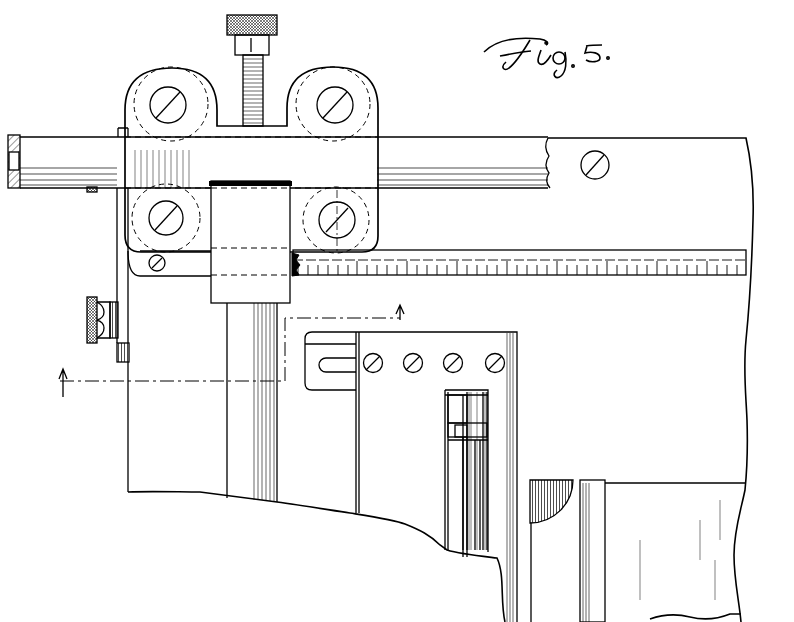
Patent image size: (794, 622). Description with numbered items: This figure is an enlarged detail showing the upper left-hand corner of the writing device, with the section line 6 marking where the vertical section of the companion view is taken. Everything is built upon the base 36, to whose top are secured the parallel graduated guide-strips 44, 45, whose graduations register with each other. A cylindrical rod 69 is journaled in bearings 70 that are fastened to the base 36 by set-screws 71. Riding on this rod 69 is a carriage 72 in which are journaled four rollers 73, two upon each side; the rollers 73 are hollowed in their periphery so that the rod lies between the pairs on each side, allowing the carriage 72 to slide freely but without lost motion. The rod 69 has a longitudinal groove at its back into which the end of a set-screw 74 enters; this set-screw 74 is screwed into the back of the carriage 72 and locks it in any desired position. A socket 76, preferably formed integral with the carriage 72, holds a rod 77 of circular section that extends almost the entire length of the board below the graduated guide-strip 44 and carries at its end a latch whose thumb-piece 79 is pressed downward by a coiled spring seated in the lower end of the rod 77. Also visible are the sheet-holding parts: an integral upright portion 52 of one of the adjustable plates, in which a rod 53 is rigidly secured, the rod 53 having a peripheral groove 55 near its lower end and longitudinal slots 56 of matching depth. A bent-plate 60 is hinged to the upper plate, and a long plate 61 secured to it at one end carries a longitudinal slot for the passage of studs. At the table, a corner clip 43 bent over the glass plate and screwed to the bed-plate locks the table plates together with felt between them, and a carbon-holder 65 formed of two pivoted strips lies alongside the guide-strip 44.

The base 36 is at (650, 380).
The rod 69 is at (445, 155).
The bearings 70 is at (16, 137).
The carriage 72 is at (251, 159).
The rollers 73 is at (167, 68).
The set-screw 74 is at (264, 46).
The socket 76 is at (250, 242).
The rod 77 is at (247, 486).
The graduated guide-strip 45 is at (538, 256).
The thumb-piece 79 is at (299, 271).
The set-screws 71 is at (100, 309).
The section line 6- 6 is at (228, 353).
The bent-plate 60 is at (343, 333).
The long plate 61 is at (436, 477).
The upright portions 52 is at (487, 388).
The peripheral groove 55 is at (465, 430).
The rods 53 is at (473, 477).
The longitudinal slots 56 is at (466, 497).
The corner clips 43 is at (548, 495).
The carbon-holder 65 is at (597, 503).
The graduated guide-strip 44 is at (675, 551).